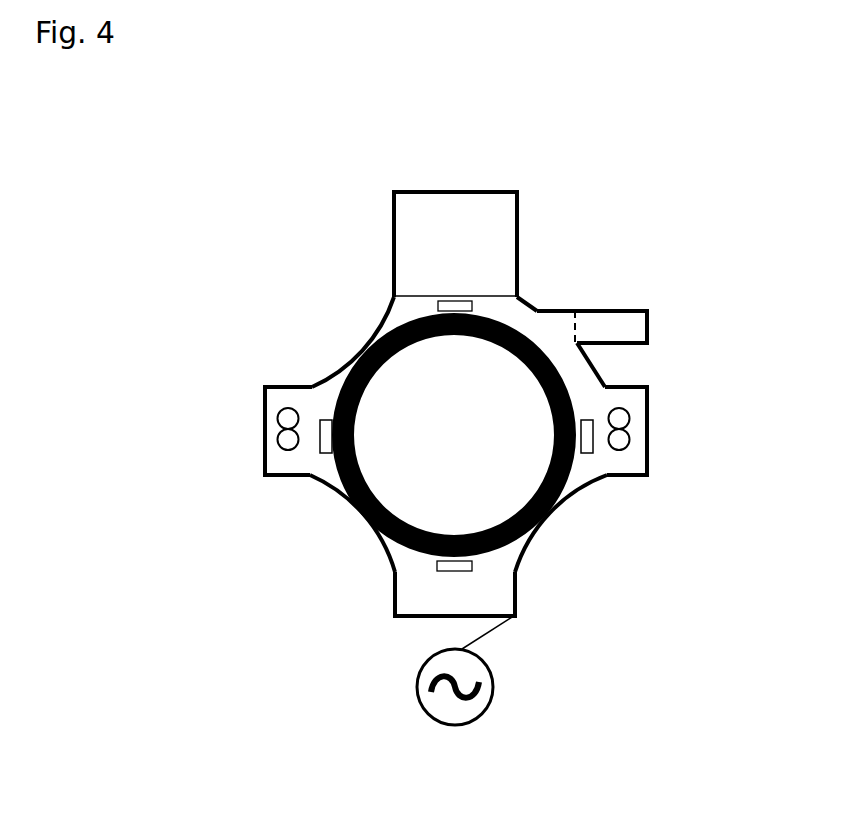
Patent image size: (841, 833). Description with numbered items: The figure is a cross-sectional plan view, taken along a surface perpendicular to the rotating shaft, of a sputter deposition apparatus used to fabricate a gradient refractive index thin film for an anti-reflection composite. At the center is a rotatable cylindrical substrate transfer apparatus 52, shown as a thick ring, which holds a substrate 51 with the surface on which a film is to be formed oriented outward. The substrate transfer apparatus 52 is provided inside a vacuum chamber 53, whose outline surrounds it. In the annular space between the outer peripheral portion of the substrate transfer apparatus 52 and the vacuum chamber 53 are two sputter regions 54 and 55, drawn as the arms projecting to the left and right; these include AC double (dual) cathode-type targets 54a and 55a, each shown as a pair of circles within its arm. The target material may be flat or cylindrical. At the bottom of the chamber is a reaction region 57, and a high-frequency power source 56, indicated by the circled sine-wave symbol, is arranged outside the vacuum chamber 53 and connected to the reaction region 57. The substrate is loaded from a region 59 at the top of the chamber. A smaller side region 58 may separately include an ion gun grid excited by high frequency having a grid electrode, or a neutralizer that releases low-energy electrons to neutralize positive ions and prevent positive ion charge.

The substrate 51 is at (305, 477).
The substrate transfer apparatus 52 is at (350, 503).
The vacuum chamber 53 is at (367, 557).
The sputter region 54 is at (273, 400).
The AC double cathode-type target 54a is at (280, 449).
The sputter region 55 is at (632, 458).
The AC double cathode-type target 55a is at (630, 432).
The high-frequency power source 56 is at (415, 695).
The reaction region 57 is at (428, 598).
The region 58 is at (563, 325).
The region 59 is at (410, 293).